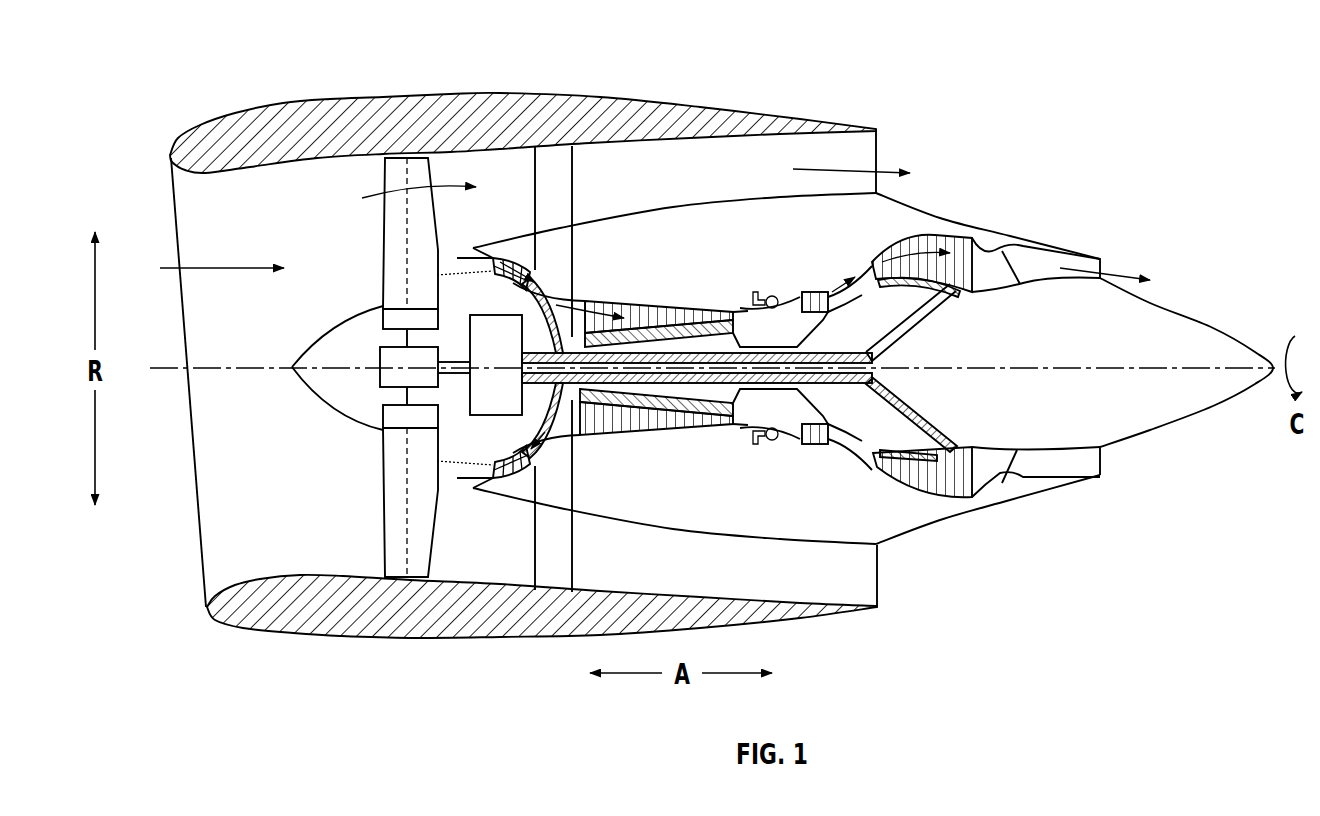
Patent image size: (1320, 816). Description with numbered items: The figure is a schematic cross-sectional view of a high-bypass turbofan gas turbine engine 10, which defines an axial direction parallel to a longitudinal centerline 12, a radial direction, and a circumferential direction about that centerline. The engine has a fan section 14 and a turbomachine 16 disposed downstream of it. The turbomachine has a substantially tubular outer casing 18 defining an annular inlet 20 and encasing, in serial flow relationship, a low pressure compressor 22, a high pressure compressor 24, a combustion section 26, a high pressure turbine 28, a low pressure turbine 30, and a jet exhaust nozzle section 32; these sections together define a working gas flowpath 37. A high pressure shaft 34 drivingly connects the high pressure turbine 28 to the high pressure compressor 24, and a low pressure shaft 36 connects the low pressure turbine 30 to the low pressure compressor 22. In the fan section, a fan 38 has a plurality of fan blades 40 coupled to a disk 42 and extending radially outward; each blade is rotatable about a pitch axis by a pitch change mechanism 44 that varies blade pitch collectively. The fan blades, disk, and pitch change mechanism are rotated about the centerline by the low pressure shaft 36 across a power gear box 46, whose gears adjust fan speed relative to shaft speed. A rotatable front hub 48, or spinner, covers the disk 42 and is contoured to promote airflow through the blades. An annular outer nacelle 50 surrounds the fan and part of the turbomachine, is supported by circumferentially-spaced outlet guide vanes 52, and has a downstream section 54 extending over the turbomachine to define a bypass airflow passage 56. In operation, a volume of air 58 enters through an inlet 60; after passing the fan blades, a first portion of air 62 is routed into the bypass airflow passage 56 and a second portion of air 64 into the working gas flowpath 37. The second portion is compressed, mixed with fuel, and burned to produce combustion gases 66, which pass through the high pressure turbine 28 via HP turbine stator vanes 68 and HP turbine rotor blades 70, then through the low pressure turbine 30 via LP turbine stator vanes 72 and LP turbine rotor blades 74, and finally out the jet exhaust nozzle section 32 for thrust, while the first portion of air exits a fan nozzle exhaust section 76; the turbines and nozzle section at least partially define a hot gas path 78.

The gas turbine engine 10 is at (1018, 110).
The longitudinal centerline 12 is at (1040, 366).
The fan section 14 is at (515, 314).
The turbomachine 16 is at (855, 370).
The outer casing 18 is at (714, 528).
The annular inlet 20 is at (488, 474).
The low pressure compressor 22 is at (525, 427).
The high pressure compressor 24 is at (603, 430).
The combustion section 26 is at (779, 407).
The high pressure turbine 28 is at (834, 432).
The low pressure turbine 30 is at (916, 515).
The jet exhaust nozzle section 32 is at (1013, 490).
The high pressure shaft 34 is at (778, 343).
The low pressure shaft 36 is at (885, 333).
The working gas flowpath 37 is at (562, 428).
The fan 38 is at (345, 420).
The fan blades 40 is at (381, 500).
The disk 42 is at (398, 327).
The pitch change mechanism 44 is at (383, 313).
The power gear box 46 is at (520, 305).
The front hub 48 is at (292, 367).
The outer nacelle 50 is at (531, 381).
The outlet guide vanes 52 is at (574, 187).
The downstream section 54 is at (808, 126).
The bypass airflow passage 56 is at (732, 179).
The volume of air 58 is at (222, 265).
The inlet 60 is at (203, 582).
The first portion of air 62 is at (397, 195).
The second portion of air 64 is at (465, 258).
The combustion gases 66 is at (915, 250).
The HP turbine stator vanes 68 is at (787, 438).
The HP turbine rotor blades 70 is at (807, 438).
The LP turbine stator vanes 72 is at (880, 474).
The LP turbine rotor blades 74 is at (890, 484).
The fan nozzle exhaust section 76 is at (863, 156).
The hot gas path 78 is at (858, 273).